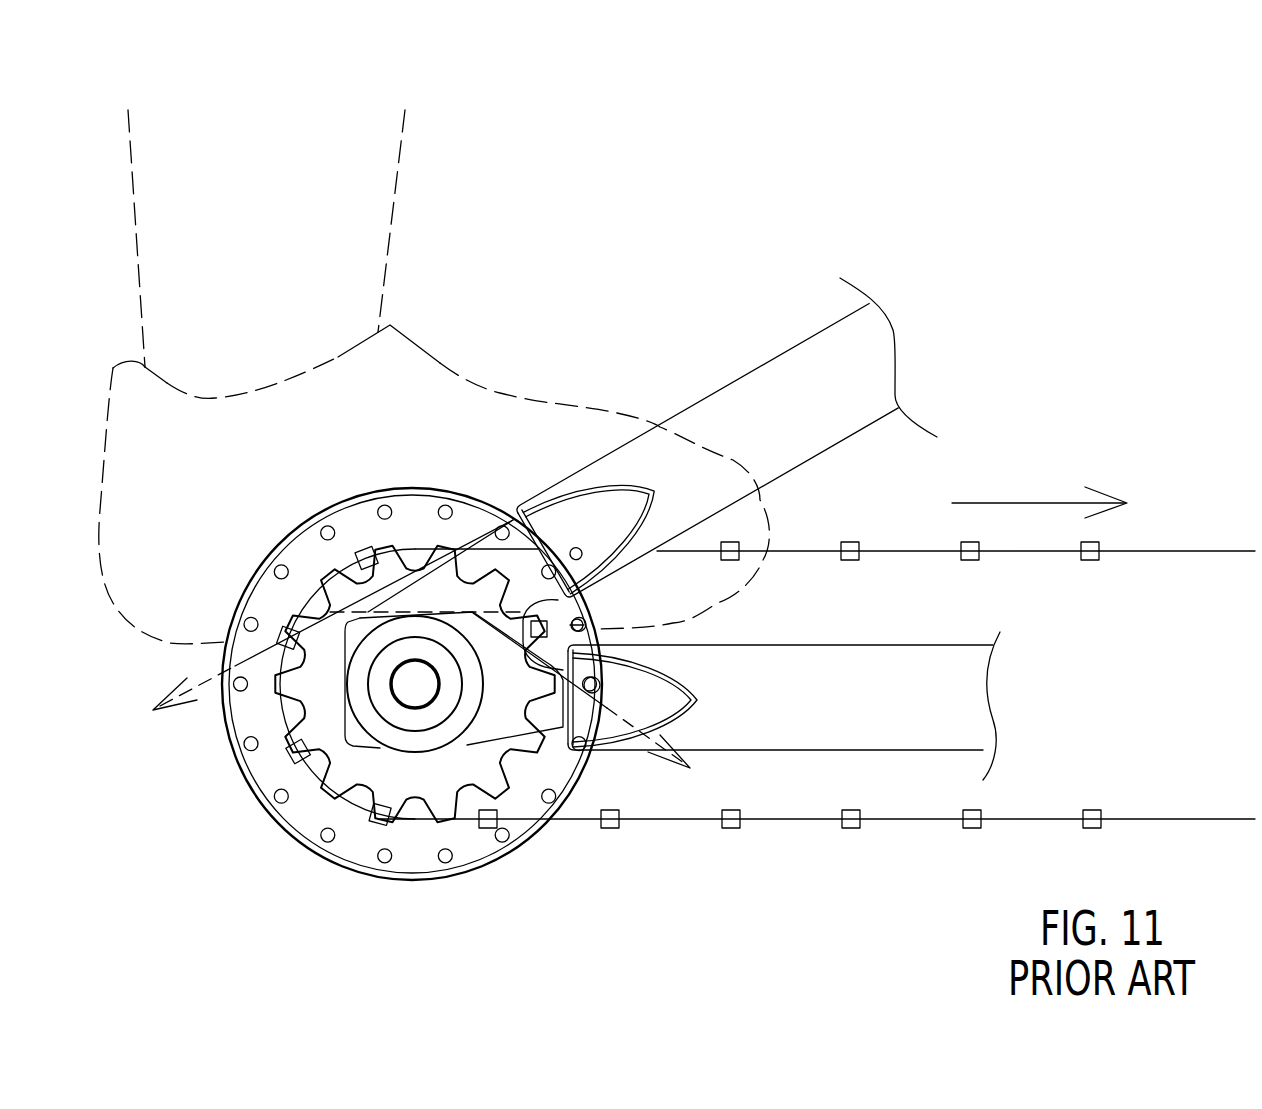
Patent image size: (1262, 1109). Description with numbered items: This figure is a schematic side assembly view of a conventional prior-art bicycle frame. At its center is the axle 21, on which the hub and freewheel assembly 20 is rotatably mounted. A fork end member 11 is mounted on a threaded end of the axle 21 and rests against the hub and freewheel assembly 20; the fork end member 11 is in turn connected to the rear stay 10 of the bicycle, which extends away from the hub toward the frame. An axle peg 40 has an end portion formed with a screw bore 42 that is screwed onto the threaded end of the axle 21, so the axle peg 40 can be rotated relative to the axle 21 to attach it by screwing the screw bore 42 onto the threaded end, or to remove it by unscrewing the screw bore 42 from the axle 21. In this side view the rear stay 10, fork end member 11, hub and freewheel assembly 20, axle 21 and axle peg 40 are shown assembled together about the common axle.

The rear stay 10 is at (995, 699).
The fork end member 11 is at (473, 592).
The hub and freewheel assembly 20 is at (548, 848).
The axle 21 is at (415, 688).
The axle peg 40 is at (463, 747).
The screw bore 42 is at (412, 687).